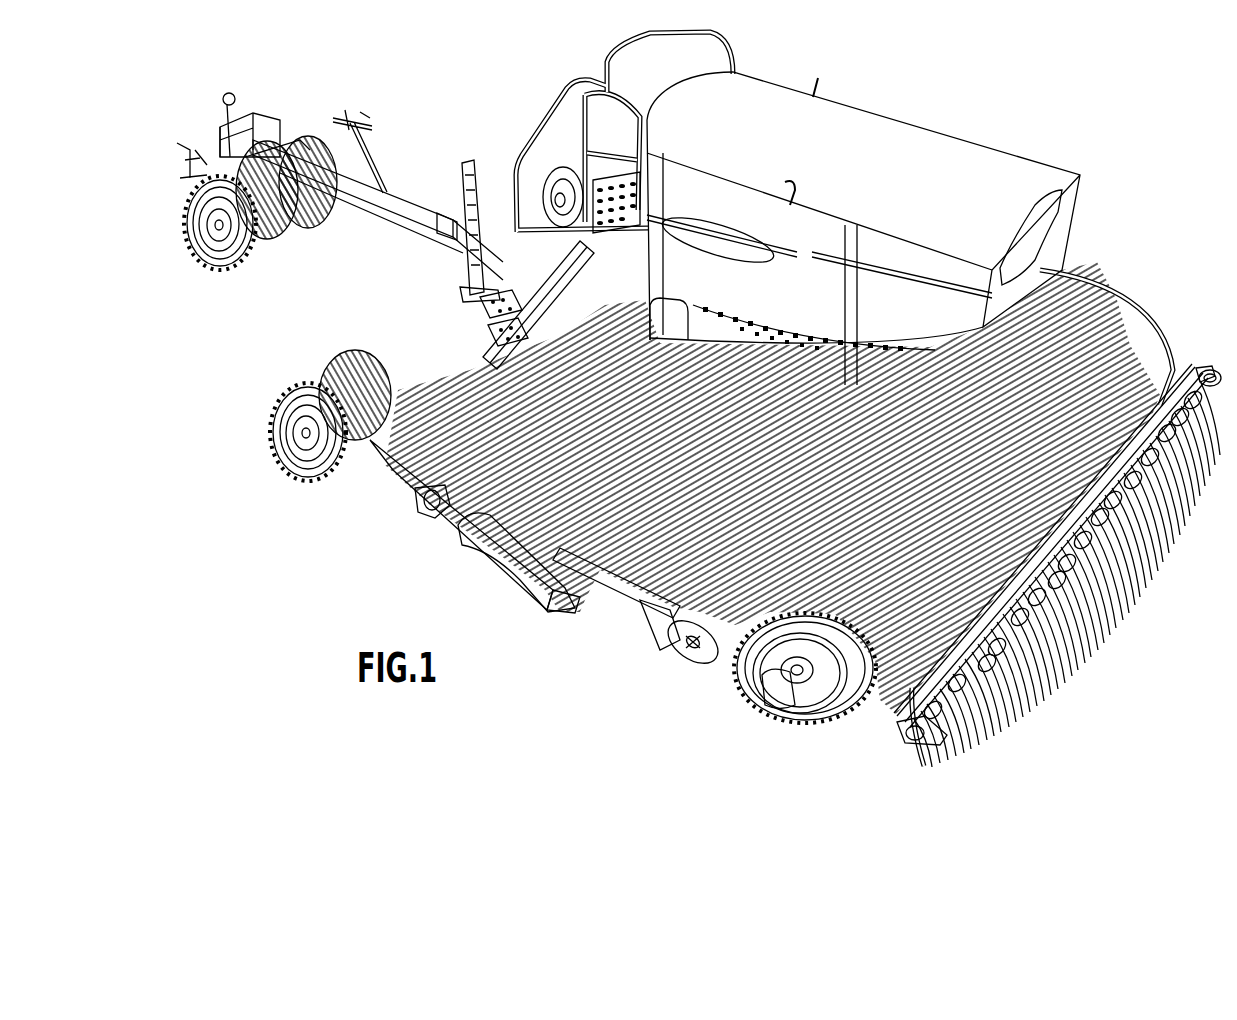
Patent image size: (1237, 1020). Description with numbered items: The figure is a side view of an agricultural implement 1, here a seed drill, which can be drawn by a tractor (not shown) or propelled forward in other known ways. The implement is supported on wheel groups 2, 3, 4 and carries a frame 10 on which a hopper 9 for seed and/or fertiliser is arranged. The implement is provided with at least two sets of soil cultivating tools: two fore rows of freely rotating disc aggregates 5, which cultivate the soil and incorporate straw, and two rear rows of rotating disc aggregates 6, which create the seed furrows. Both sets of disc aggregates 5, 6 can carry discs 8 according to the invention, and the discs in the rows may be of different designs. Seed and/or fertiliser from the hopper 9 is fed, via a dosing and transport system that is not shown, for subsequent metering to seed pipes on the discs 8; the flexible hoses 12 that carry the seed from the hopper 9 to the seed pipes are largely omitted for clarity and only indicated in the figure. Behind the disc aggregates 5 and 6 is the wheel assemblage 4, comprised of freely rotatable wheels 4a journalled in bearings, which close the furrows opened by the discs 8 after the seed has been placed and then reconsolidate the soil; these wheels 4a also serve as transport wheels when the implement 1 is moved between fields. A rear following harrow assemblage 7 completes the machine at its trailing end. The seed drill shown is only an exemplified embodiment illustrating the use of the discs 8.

The agricultural implement 1 is at (1133, 190).
The wheel group 2 is at (210, 262).
The wheel group 3 is at (300, 468).
The wheel assemblage 4 is at (799, 716).
The wheels 4a is at (823, 713).
The disc aggregates 5 is at (448, 520).
The disc aggregates 6 is at (666, 650).
The harrow assemblage 7 is at (918, 790).
The discs 8 is at (682, 338).
The hopper 9 is at (1010, 160).
The frame 10 is at (497, 360).
The flexible hoses 12 is at (770, 320).